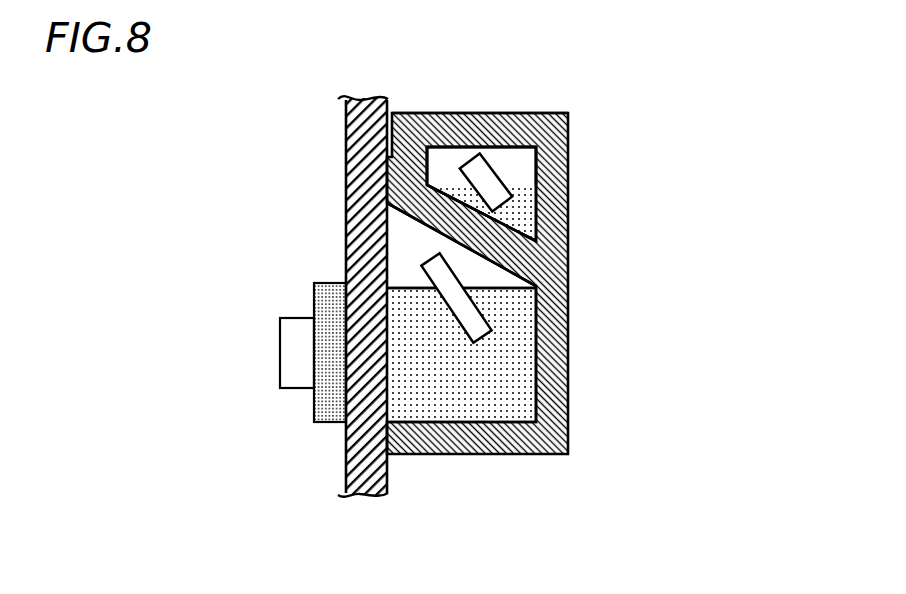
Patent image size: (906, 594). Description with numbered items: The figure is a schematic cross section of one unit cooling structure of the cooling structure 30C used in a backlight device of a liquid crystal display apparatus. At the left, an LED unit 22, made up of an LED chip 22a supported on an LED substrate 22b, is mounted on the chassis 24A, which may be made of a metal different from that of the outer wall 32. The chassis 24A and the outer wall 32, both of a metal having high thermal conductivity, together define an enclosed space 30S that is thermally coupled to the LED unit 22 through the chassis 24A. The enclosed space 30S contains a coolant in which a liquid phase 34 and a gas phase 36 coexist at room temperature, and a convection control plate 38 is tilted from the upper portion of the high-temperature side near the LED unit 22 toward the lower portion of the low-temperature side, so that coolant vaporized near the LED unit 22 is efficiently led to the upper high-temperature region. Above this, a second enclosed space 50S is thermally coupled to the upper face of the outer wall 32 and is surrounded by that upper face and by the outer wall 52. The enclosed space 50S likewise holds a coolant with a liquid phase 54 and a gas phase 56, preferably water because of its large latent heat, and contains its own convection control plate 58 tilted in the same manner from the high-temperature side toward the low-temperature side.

The LED unit 22 is at (283, 336).
The LED chip 22a is at (293, 367).
The LED substrate 22b is at (325, 405).
The chassis 24A is at (355, 500).
The cooling structure 30C is at (522, 269).
The outer wall 32 is at (537, 455).
The liquid phase 34 is at (518, 348).
The gas phase 36 is at (493, 277).
The convection control plate 38 is at (425, 263).
The outer wall 52 is at (535, 113).
The liquid phase 54 is at (523, 224).
The gas phase 56 is at (520, 175).
The convection control plate 58 is at (500, 164).
The enclosed space 50S is at (623, 162).
The enclosed space 30S is at (623, 283).